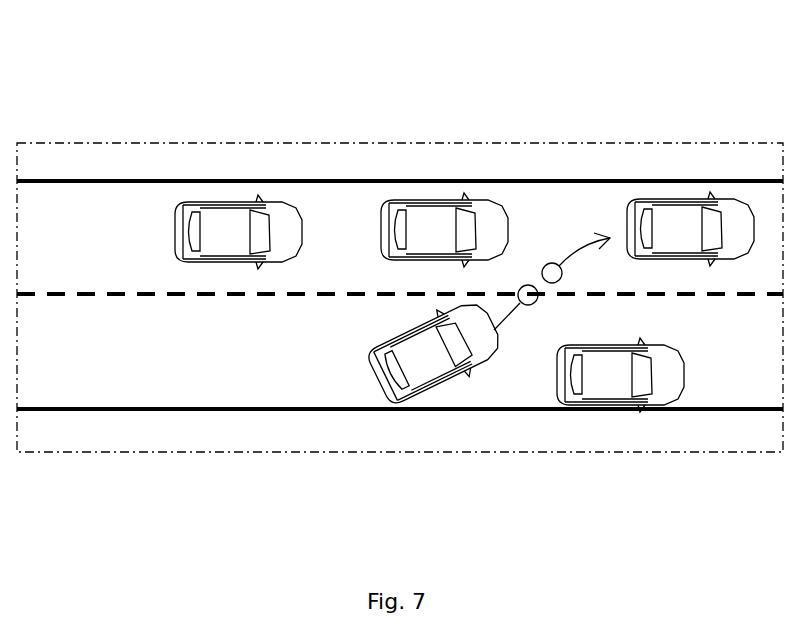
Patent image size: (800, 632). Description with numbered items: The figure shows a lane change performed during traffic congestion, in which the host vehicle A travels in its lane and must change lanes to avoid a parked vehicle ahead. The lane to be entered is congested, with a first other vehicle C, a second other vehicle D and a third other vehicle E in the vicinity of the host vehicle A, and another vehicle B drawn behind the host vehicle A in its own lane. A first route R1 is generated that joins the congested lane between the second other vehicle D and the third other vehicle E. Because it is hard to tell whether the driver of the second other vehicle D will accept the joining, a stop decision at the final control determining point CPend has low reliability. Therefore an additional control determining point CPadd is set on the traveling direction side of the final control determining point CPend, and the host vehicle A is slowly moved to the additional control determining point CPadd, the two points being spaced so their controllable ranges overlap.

The host vehicle A is at (388, 392).
The other vehicle (rear in adjacent lane) B is at (612, 385).
The first other vehicle C is at (225, 227).
The second other vehicle D is at (432, 226).
The third other vehicle E is at (676, 230).
The first route R1 is at (586, 244).
The additional control determining point CPadd is at (548, 262).
The final control determining point CPend is at (528, 305).